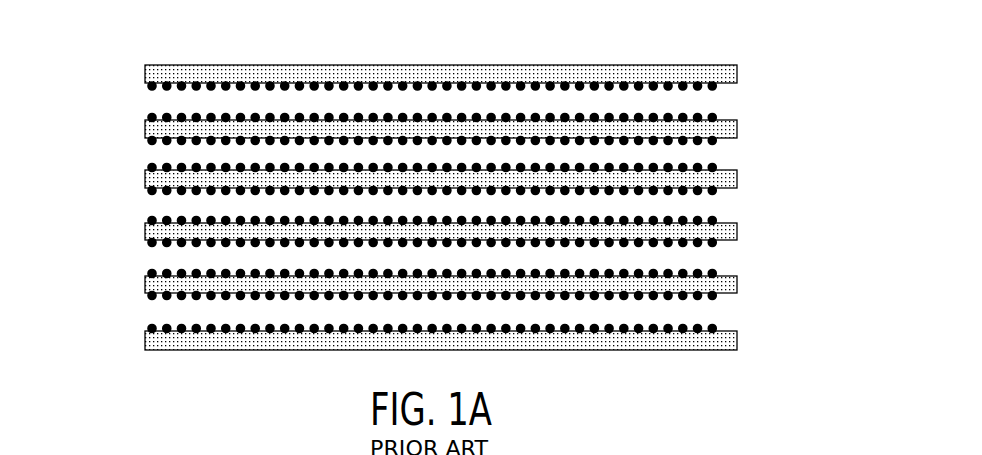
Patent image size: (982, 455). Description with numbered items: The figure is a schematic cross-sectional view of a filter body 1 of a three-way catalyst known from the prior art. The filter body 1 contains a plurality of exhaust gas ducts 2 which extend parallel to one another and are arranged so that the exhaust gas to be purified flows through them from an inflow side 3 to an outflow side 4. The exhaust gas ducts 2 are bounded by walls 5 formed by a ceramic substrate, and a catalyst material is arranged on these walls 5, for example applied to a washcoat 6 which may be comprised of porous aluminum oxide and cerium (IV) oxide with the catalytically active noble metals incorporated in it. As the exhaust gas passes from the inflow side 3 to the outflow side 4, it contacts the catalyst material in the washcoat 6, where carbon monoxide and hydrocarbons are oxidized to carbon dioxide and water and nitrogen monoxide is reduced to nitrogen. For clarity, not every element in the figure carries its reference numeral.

The filter body 1 is at (767, 50).
The exhaust gas ducts 2 is at (720, 203).
The inflow side 3 is at (112, 162).
The outflow side 4 is at (771, 162).
The walls 5 is at (165, 231).
The washcoat 6 is at (152, 190).